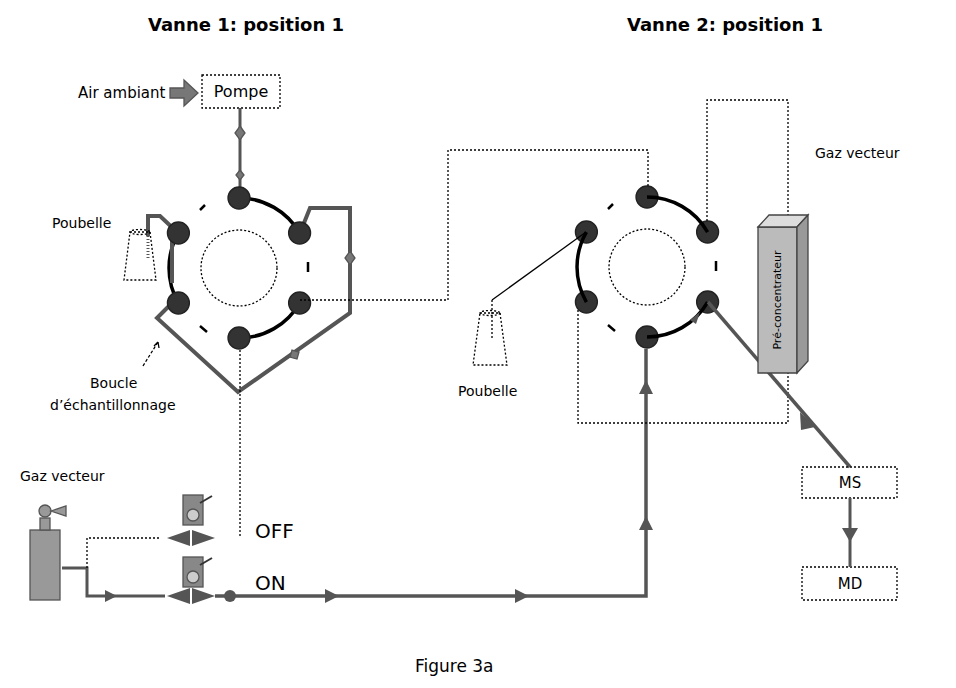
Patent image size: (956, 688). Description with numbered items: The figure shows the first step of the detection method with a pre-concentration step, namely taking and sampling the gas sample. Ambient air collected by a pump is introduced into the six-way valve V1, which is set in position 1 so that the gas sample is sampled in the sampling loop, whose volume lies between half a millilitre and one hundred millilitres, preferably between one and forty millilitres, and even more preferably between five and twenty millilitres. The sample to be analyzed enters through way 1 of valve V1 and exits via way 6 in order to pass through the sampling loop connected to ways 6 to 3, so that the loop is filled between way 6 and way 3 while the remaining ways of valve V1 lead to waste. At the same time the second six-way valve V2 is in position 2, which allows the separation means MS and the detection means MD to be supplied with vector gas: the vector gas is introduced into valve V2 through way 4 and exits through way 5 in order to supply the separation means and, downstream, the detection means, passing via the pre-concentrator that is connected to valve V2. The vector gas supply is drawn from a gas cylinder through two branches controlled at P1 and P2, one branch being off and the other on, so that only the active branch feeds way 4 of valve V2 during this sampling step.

The 6-way valve V1 is at (272, 190).
The second valve V2 is at (672, 186).
The first pressure regulator / valve of carrier gas P1 is at (174, 520).
The second pressure regulator / valve of carrier gas P2 is at (174, 580).
The way 1 is at (443, 204).
The position 2 is at (386, 233).
The way 3 is at (385, 299).
The way 4 is at (443, 331).
The way 5 is at (500, 300).
The way 6 is at (495, 232).